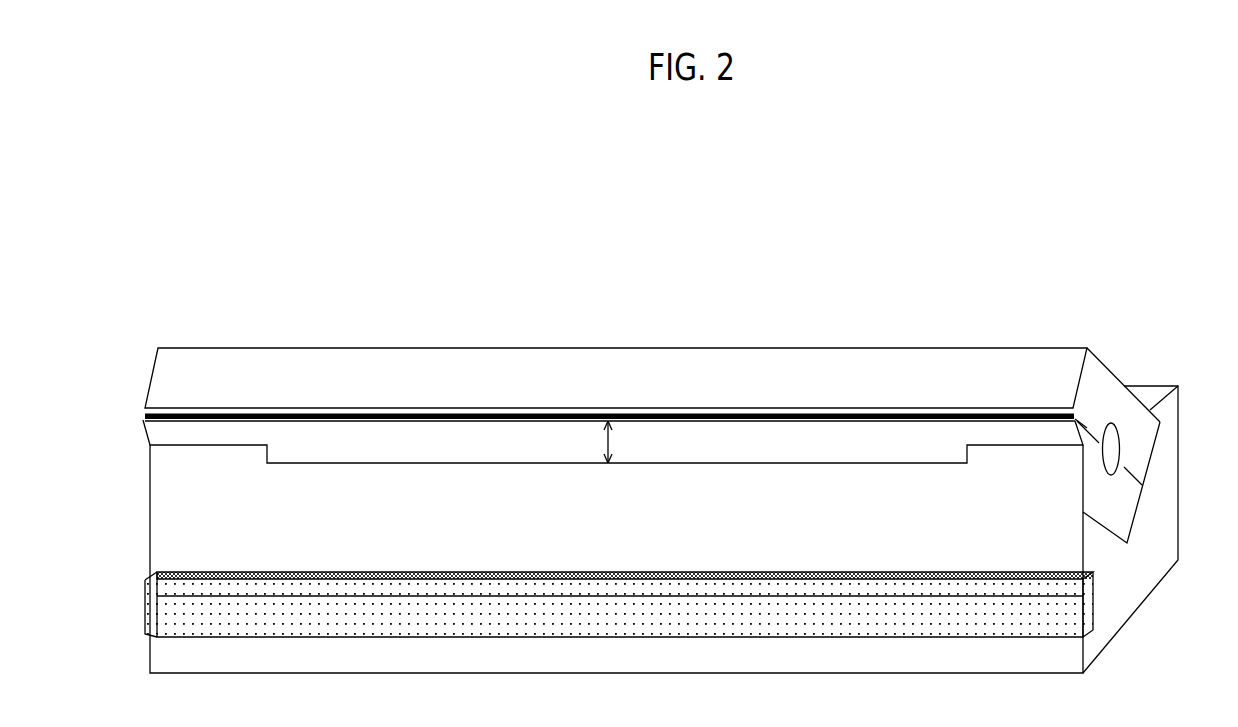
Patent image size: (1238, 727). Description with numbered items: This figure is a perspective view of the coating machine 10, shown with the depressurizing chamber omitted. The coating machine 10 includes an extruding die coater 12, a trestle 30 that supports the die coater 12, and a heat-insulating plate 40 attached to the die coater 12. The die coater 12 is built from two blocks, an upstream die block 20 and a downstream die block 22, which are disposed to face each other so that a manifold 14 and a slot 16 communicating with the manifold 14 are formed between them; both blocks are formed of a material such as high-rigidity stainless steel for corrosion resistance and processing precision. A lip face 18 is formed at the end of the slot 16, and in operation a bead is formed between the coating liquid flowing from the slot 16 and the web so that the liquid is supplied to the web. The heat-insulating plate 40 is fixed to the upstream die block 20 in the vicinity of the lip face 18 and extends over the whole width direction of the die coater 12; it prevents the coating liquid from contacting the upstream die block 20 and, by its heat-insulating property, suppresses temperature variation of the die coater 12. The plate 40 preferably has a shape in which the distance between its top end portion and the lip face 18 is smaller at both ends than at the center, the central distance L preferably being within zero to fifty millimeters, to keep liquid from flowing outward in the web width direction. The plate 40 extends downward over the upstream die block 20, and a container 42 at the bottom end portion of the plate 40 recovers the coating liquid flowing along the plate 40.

The coating machine 10 is at (670, 220).
The extruding die coater 12 is at (978, 340).
The manifold 14 is at (1113, 445).
The slot 16 is at (1087, 426).
The lip face 18 is at (143, 409).
The upstream die block 20 is at (1127, 517).
The downstream die block 22 is at (1114, 390).
The trestle 30 is at (1166, 503).
The heat-insulating plate 40 is at (157, 518).
The container 42 is at (166, 616).